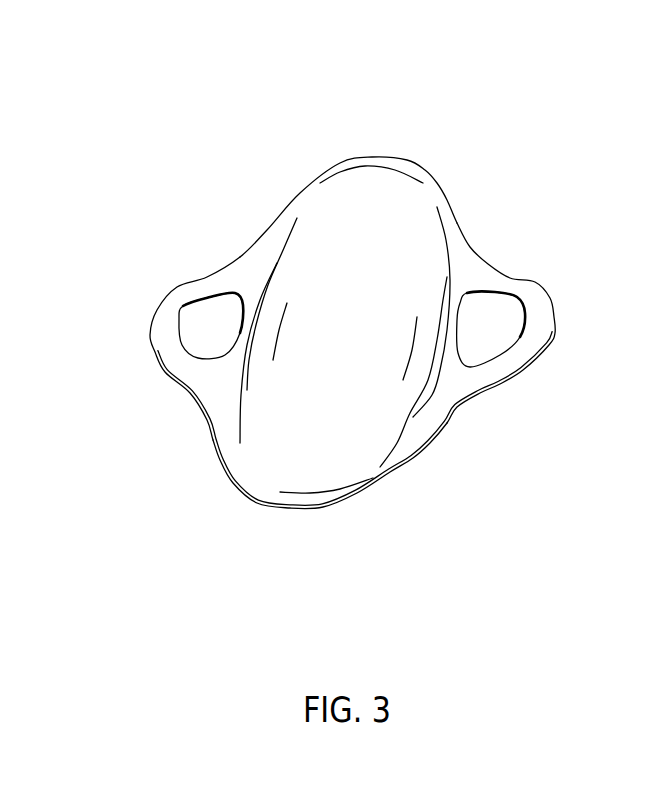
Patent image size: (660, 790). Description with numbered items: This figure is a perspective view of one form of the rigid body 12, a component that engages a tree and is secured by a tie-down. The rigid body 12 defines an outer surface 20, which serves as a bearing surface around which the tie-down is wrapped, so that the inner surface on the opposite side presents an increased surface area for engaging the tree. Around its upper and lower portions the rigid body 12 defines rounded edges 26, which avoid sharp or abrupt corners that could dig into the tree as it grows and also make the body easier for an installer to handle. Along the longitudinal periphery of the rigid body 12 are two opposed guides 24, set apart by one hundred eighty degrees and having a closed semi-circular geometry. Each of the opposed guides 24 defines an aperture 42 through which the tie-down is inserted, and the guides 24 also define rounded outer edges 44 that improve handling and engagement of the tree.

The rigid body 12 is at (500, 106).
The outer surface 20 is at (393, 243).
The opposed guides 24 is at (167, 332).
The rounded edges 26 is at (394, 157).
The apertures 42 is at (215, 332).
The rounded outer edges 44 is at (153, 318).